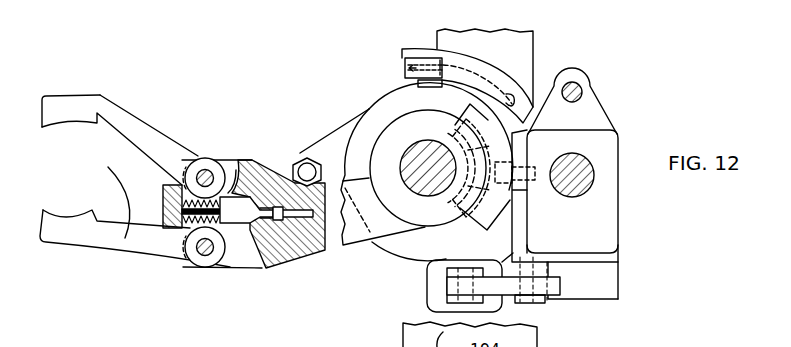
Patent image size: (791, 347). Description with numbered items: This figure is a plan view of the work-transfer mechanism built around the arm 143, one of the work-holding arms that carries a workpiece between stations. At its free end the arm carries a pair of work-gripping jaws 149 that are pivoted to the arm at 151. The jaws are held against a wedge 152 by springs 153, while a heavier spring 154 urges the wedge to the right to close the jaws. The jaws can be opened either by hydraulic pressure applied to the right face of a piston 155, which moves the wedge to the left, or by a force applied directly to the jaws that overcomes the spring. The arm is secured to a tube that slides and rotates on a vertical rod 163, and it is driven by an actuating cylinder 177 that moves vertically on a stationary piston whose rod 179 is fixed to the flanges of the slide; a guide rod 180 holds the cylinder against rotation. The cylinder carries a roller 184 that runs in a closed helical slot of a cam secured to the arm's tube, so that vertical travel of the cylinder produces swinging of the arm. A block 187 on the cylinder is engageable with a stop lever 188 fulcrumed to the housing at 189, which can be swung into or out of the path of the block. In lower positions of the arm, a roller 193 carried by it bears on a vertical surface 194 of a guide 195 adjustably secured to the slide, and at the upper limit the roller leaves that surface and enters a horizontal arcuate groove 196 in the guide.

The arm 143 is at (317, 250).
The jaws 149 is at (153, 147).
The pivot 151 is at (203, 176).
The wedge 152 is at (234, 162).
The springs 153 is at (236, 207).
The heavier spring 154 is at (168, 186).
The piston 155 is at (282, 242).
The vertical rod 163 is at (429, 141).
The actuating cylinder 177 is at (604, 222).
The piston rod 179 is at (590, 157).
The guide rod 180 is at (583, 85).
The roller 184 is at (513, 197).
The block 187 is at (604, 275).
The stop lever 188 is at (508, 292).
The fulcrum 189 is at (525, 302).
The roller 193 is at (405, 68).
The vertical surface 194 is at (405, 58).
The guide 195 is at (523, 61).
The horizontal arcuate groove 196 is at (505, 97).